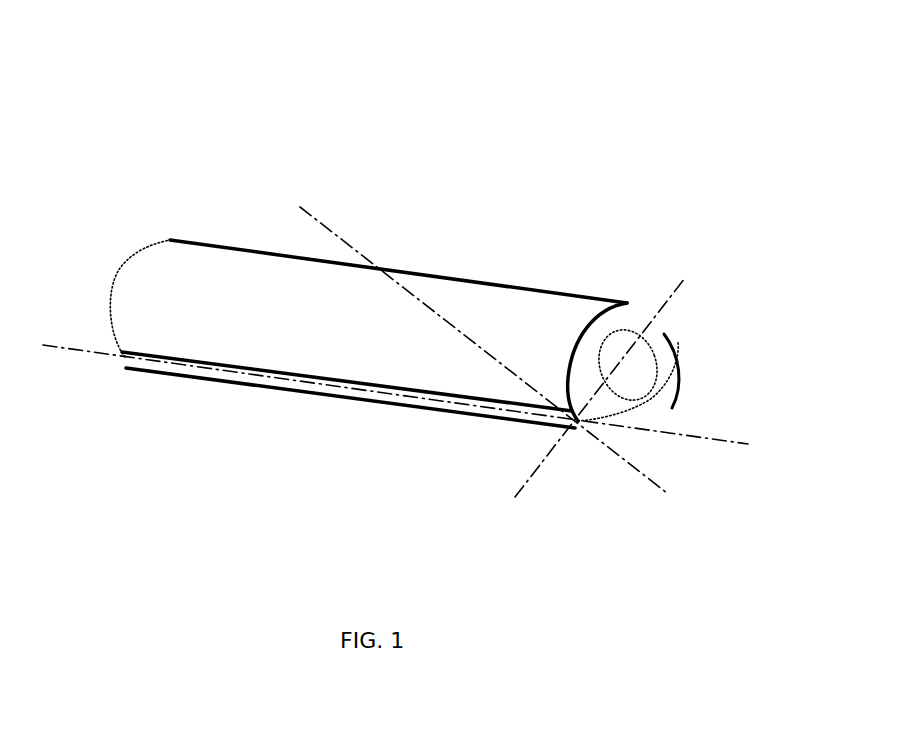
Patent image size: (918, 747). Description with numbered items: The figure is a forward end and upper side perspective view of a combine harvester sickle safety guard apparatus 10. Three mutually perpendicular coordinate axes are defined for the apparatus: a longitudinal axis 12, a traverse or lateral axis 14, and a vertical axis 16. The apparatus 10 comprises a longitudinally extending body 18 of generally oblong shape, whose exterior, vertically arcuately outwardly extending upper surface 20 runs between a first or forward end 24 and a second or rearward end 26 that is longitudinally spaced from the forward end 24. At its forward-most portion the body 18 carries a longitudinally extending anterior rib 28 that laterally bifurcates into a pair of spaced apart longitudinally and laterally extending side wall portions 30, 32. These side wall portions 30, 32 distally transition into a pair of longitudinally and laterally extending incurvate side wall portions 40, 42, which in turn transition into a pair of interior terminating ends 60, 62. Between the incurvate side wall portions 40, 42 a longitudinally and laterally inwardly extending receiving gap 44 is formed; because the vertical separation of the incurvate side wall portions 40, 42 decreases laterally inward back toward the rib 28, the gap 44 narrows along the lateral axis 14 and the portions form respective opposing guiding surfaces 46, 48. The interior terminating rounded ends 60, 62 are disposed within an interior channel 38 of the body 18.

The combine harvester sickle safety guard apparatus 10 is at (548, 70).
The longitudinal axis 12 is at (80, 350).
The lateral axis 14 is at (537, 472).
The vertical axis 16 is at (330, 243).
The longitudinally extending body 18 is at (480, 291).
The upper surface 20 is at (432, 288).
The forward end 24 is at (580, 335).
The rearward end 26 is at (143, 255).
The anterior rib 28 is at (405, 402).
The side wall portion 30 is at (572, 377).
The side wall portion 32 is at (613, 410).
The interior channel 38 is at (640, 385).
The incurvate side wall portion 40 is at (609, 362).
The incurvate side wall portion 42 is at (628, 372).
The receiving gap 44 is at (679, 306).
The guiding surface 46 is at (628, 332).
The guiding surface 48 is at (638, 350).
The interior terminating end 60 is at (593, 388).
The interior terminating end 62 is at (603, 392).